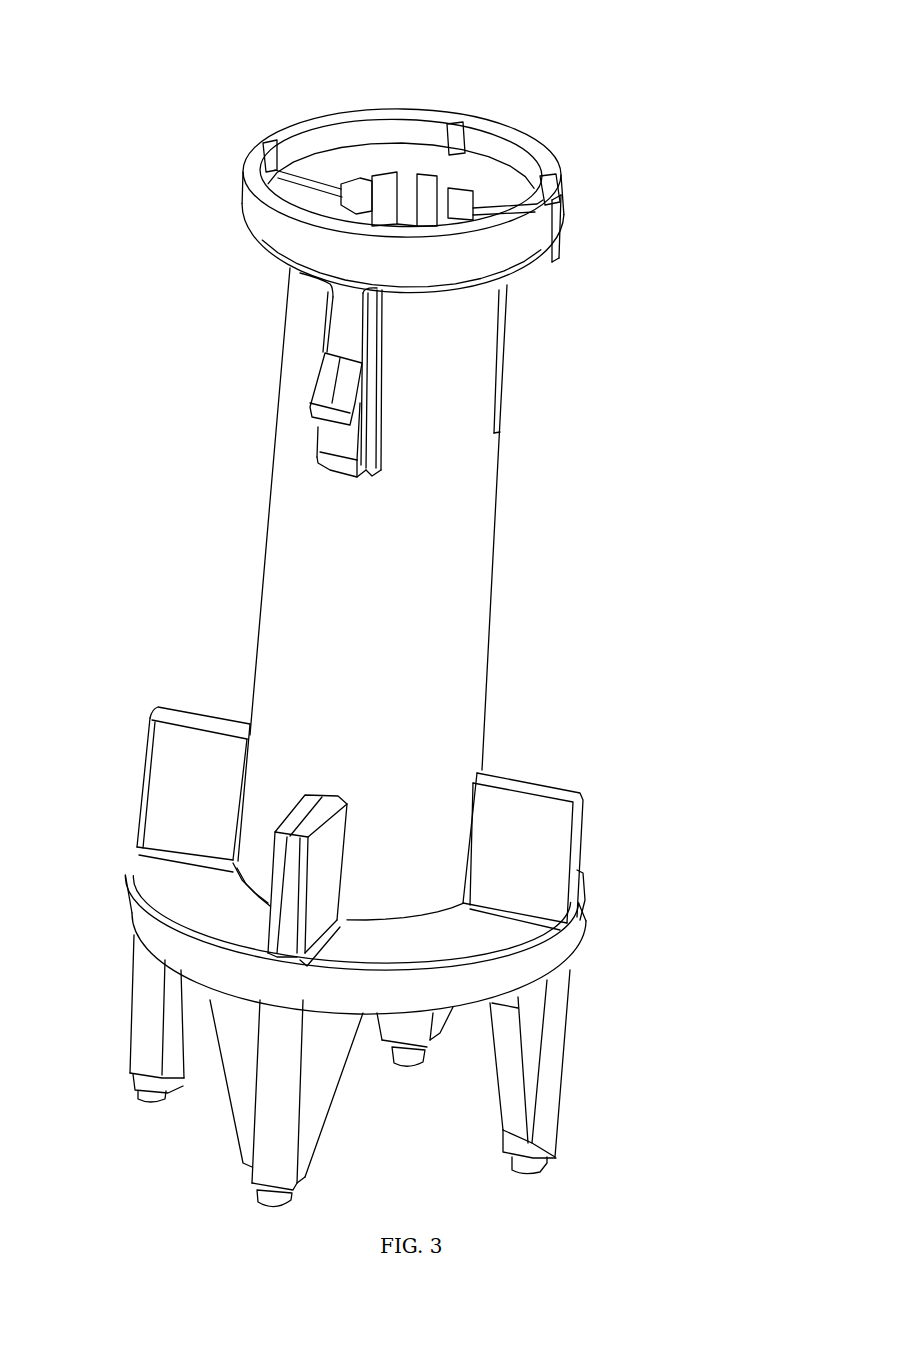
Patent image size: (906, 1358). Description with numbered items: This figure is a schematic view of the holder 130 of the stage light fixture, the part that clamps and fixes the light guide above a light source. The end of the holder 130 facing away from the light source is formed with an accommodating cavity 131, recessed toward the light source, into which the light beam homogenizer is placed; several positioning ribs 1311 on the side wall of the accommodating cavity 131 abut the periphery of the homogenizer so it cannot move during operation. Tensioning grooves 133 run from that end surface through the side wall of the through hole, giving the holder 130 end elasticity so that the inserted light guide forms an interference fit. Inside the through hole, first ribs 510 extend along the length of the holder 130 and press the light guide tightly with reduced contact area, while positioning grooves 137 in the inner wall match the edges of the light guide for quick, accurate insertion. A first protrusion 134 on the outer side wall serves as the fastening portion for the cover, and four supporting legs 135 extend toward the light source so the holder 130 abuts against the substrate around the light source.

The holder 130 is at (280, 524).
The accommodating cavity 131 is at (497, 183).
The positioning rib 1311 is at (452, 118).
The tensioning groove 133 is at (557, 232).
The first protrusion 134 is at (330, 388).
The supporting leg 135 is at (552, 1096).
The positioning groove 137 is at (430, 173).
The first rib 510 is at (382, 172).